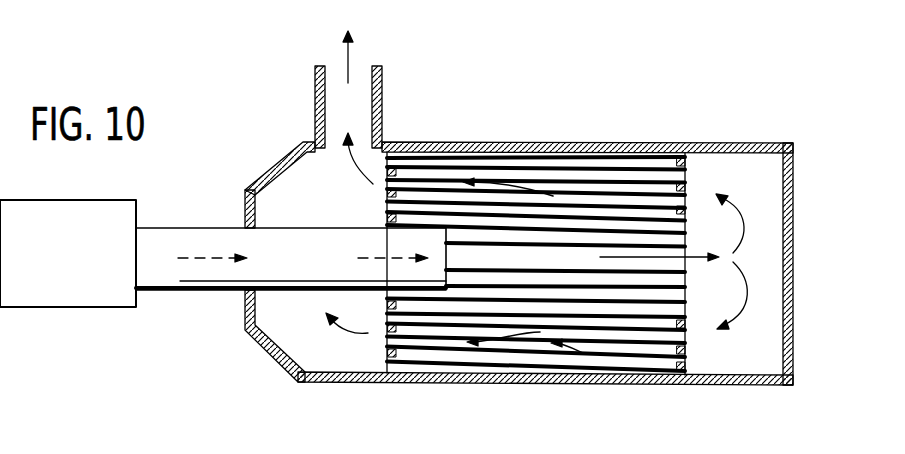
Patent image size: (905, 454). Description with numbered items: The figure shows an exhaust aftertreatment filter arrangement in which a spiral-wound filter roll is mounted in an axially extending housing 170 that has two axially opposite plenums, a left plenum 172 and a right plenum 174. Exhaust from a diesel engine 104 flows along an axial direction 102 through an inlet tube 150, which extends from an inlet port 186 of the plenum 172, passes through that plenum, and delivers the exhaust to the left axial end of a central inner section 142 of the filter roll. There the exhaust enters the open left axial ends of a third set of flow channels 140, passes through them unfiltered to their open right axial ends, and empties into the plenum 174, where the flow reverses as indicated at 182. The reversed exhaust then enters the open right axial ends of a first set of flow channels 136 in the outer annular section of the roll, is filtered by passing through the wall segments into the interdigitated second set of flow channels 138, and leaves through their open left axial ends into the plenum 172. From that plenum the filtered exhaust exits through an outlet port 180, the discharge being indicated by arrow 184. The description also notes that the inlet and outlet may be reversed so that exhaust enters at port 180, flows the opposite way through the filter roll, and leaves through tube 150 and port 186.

The axial direction 102 is at (203, 258).
The diesel engine 104 is at (68, 308).
The first set of flow channels 136 is at (500, 352).
The second set of flow channels 138 is at (565, 342).
The third set of flow channels 140 is at (712, 247).
The central inner section 142 is at (440, 256).
The inlet tube 150 is at (327, 292).
The housing 170 is at (652, 143).
The plenum 172 is at (288, 172).
The plenum 174 is at (735, 160).
The outlet port 180 is at (384, 137).
The exhaust flow reversal 182 is at (750, 216).
The arrow 184 is at (352, 170).
The inlet port 186 is at (247, 226).